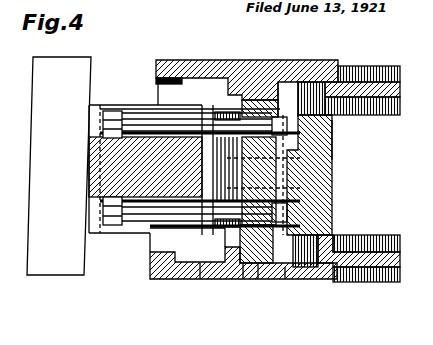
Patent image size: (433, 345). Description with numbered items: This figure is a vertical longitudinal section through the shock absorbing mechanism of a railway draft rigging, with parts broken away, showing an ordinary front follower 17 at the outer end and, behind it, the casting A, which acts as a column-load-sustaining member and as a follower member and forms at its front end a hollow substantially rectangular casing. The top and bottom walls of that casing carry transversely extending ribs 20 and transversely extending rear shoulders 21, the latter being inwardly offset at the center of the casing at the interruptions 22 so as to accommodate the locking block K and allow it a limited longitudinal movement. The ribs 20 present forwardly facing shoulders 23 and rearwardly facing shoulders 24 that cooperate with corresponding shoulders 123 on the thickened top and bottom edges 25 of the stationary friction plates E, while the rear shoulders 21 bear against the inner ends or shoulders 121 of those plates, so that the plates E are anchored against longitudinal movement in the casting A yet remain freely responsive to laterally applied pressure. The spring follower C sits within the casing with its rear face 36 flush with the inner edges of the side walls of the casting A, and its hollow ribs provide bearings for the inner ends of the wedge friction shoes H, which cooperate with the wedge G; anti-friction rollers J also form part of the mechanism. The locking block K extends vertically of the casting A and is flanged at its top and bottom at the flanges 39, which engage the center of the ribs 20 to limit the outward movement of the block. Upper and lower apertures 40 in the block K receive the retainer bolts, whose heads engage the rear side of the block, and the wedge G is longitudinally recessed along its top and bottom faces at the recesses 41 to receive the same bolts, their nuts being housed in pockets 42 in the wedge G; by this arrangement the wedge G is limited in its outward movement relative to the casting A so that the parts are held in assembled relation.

The front follower 17 is at (323, 323).
The transversely extending ribs 20 is at (262, 76).
The rear shoulders 21 is at (326, 63).
The interruptions or offsets 22 is at (333, 68).
The forwardly facing transverse shoulders 23 is at (243, 50).
The rearwardly facing shoulders 24 is at (282, 66).
The thickened edges 25 is at (152, 238).
The rear face 36 is at (334, 137).
The flanges 39 is at (258, 283).
The apertures 40 is at (300, 200).
The longitudinal recesses 41 is at (145, 128).
The pockets 42 is at (95, 112).
The inner ends or shoulders 121 is at (285, 283).
The shoulders 123 is at (208, 270).
The casting A is at (290, 80).
The spring follower C is at (333, 165).
The stationary friction plates E is at (206, 231).
The wedge G is at (89, 167).
The wedge friction shoes H is at (210, 118).
The anti-friction rollers J is at (187, 118).
The locking block or bar K is at (243, 283).